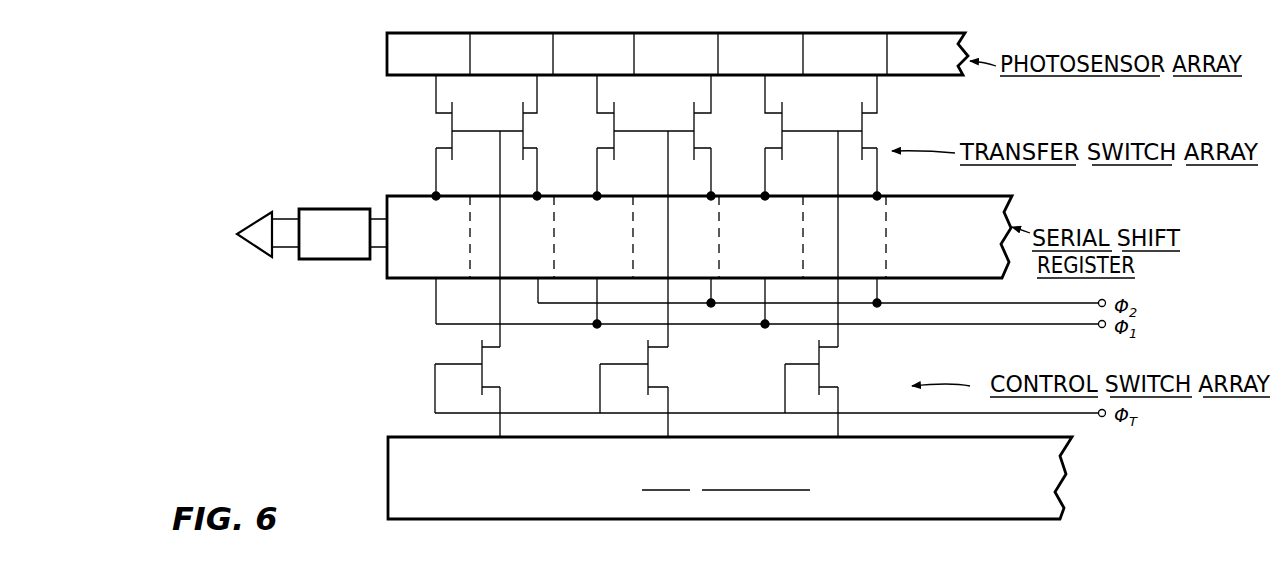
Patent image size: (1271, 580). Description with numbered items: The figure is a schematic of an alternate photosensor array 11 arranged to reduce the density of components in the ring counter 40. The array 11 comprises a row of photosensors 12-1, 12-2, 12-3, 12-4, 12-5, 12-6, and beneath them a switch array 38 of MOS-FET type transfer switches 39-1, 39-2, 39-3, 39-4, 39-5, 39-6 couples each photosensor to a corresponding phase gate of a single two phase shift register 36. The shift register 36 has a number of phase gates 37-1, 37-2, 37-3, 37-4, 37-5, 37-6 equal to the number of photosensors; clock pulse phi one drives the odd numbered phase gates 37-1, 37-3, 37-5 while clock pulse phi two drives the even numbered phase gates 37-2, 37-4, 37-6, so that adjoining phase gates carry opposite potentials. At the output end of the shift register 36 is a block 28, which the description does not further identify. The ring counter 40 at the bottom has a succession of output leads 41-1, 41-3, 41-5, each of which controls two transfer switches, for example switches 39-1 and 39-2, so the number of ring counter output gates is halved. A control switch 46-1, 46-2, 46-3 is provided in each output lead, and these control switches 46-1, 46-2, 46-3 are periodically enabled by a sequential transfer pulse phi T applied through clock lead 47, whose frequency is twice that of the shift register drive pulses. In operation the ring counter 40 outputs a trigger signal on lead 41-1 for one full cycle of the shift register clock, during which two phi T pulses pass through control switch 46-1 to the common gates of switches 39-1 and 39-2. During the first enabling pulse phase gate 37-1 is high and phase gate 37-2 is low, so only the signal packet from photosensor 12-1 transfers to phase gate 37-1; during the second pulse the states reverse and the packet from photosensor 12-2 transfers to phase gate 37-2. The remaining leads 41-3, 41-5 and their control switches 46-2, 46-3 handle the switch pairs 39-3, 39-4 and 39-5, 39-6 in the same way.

The photosensor array 11 is at (677, 37).
The photosensor 12-1 is at (428, 54).
The photosensor 12-2 is at (511, 54).
The photosensor 12-3 is at (593, 54).
The photosensor 12-4 is at (676, 54).
The photosensor 12-5 is at (760, 54).
The photosensor 12-6 is at (845, 54).
The switch array 38 is at (649, 135).
The transfer switch 39-1 is at (446, 131).
The transfer switch 39-2 is at (518, 119).
The transfer switch 39-3 is at (610, 138).
The transfer switch 39-4 is at (690, 119).
The transfer switch 39-5 is at (778, 138).
The transfer switch 39-6 is at (858, 119).
The shift register 36 is at (652, 263).
The phase gate 37-1 is at (446, 248).
The phase gate 37-2 is at (530, 248).
The phase gate 37-3 is at (620, 248).
The phase gate 37-4 is at (694, 248).
The phase gate 37-5 is at (782, 248).
The phase gate 37-6 is at (864, 248).
The output amplifier 28 is at (335, 209).
The clock lead 47 is at (673, 388).
The control switch 46-1 is at (546, 366).
The control switch 46-2 is at (713, 366).
The control switch 46-3 is at (888, 366).
The ring counter 40 is at (691, 483).
The output lead 41-1 is at (500, 425).
The output lead 41-3 is at (668, 426).
The output lead 41-5 is at (838, 426).